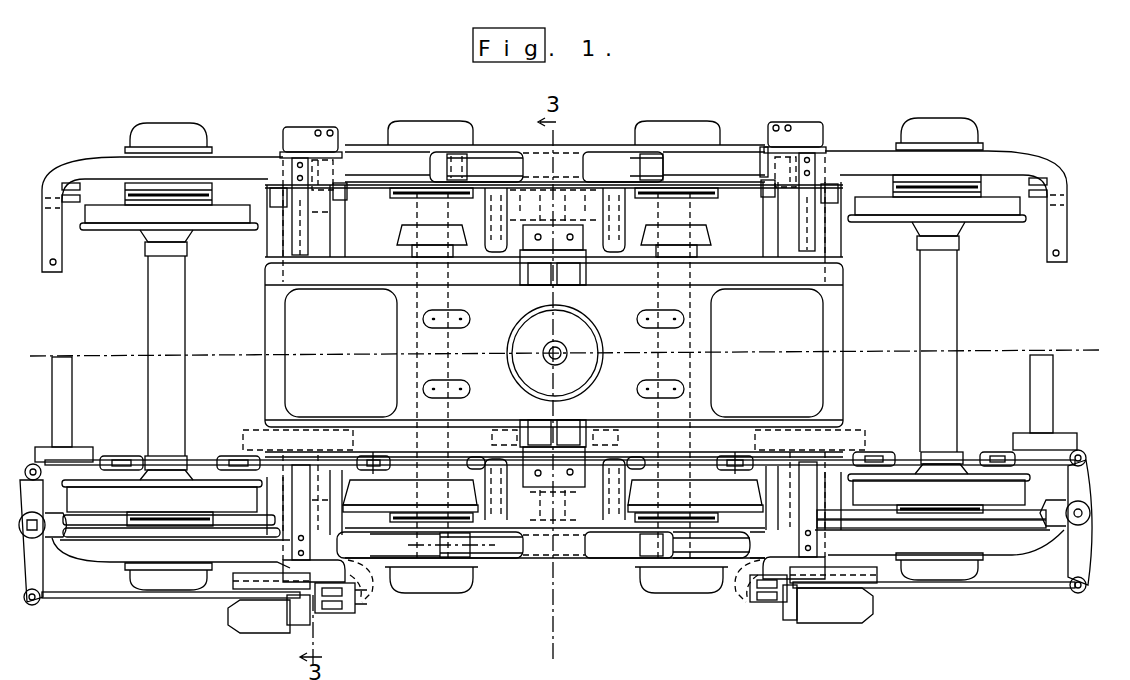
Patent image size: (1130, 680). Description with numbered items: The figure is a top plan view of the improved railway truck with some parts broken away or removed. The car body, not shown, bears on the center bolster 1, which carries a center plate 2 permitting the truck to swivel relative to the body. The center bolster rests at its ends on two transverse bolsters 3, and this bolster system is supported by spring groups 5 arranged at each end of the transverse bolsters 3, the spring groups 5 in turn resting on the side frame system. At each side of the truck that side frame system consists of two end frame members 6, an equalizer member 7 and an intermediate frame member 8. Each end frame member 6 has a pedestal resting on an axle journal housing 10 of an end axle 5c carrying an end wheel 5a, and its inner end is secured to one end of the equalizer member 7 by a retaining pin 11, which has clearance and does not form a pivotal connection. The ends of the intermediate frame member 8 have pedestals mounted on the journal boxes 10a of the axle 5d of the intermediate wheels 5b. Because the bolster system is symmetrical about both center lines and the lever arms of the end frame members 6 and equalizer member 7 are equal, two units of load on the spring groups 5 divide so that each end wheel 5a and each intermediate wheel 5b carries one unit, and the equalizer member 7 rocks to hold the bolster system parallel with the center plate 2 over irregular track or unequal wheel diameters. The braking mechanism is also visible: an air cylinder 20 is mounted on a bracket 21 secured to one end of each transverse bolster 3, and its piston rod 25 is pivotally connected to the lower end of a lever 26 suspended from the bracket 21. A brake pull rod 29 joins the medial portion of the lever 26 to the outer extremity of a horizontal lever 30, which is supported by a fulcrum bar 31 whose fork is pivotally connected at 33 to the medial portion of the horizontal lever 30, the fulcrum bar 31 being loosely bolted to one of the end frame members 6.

The center bolster 1 is at (700, 336).
The center plate 2 is at (590, 334).
The transverse bolster 3 is at (330, 243).
The spring group 5 is at (768, 148).
The end wheel 5a is at (110, 222).
The intermediate wheel 5b is at (362, 207).
The end axle 5c is at (158, 323).
The axle of intermediate wheels 5d is at (440, 342).
The end frame member 6 is at (238, 165).
The equalizer member 7 is at (605, 165).
The intermediate frame member 8 is at (577, 145).
The axle journal housing 10 is at (160, 135).
The journal box 10a is at (440, 110).
The retaining pin 11 is at (474, 157).
The air cylinder 20 is at (270, 630).
The bracket 21 is at (238, 582).
The piston rod 25 is at (328, 610).
The lever 26 is at (362, 588).
The brake pull rod 29 is at (120, 602).
The horizontal lever 30 is at (26, 468).
The fulcrum bar 31 is at (128, 458).
The pivotal connection 33 is at (1080, 510).